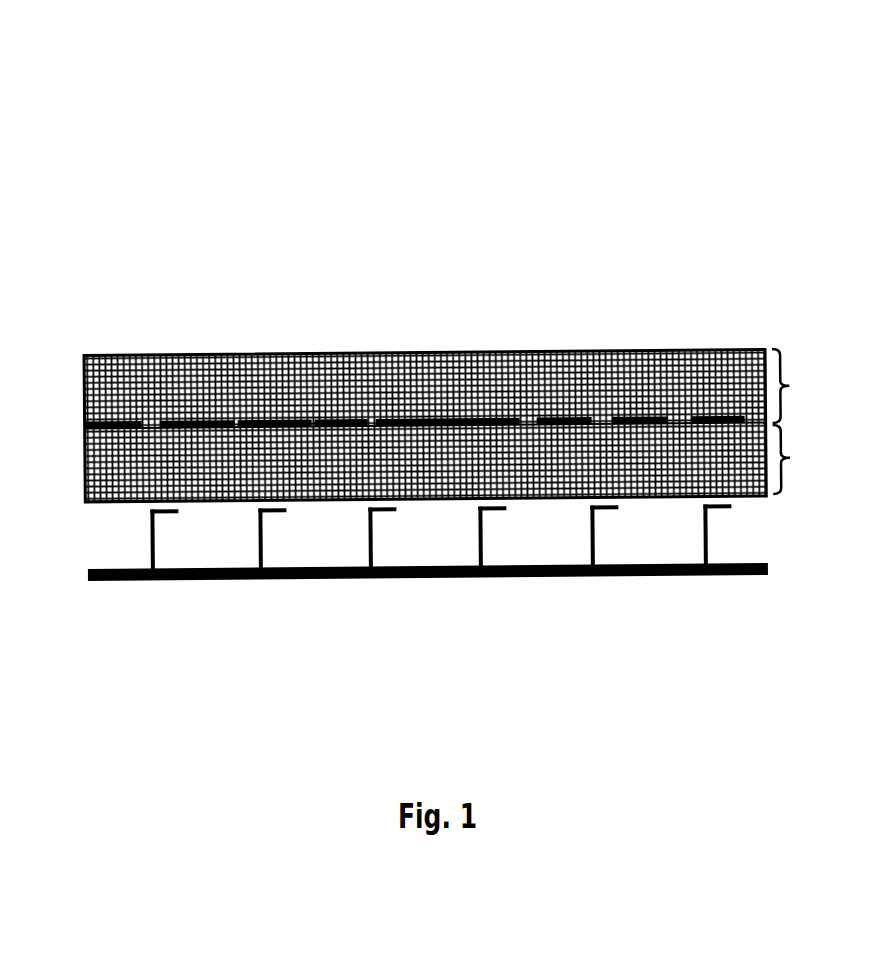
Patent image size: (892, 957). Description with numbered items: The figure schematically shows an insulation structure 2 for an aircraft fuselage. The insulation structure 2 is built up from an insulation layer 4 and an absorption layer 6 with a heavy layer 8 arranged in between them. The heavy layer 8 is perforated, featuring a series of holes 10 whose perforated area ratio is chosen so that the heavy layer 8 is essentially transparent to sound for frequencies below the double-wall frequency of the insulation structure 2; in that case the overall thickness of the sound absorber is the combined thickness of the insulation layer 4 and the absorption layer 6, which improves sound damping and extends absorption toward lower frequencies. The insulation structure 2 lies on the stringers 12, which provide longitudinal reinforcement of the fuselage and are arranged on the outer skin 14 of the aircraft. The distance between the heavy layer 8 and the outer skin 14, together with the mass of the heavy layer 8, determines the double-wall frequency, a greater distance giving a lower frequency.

The insulation structure 2 is at (437, 307).
The insulation layer 4 is at (438, 462).
The absorption layer 6 is at (437, 425).
The heavy layer 8 is at (425, 422).
The holes 10 is at (453, 421).
The stringers 12 is at (441, 536).
The outer skin 14 is at (428, 572).